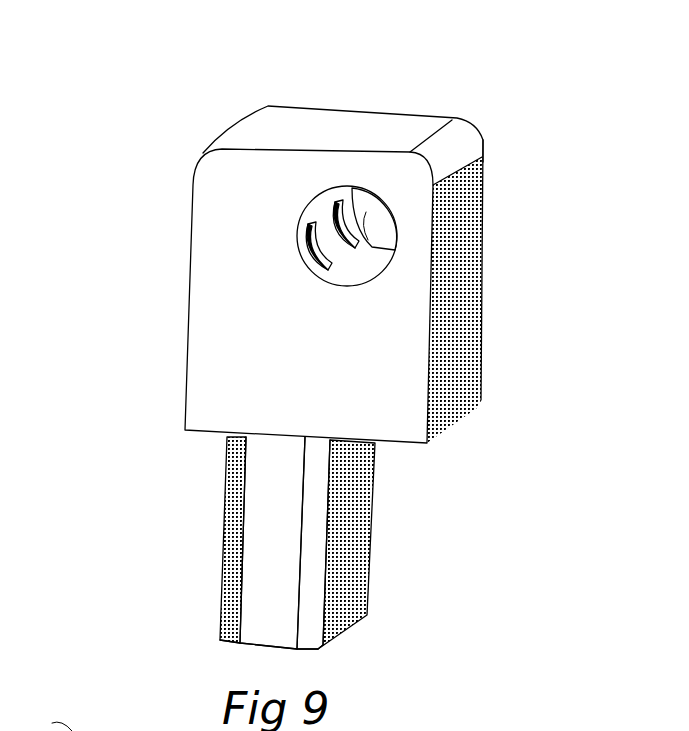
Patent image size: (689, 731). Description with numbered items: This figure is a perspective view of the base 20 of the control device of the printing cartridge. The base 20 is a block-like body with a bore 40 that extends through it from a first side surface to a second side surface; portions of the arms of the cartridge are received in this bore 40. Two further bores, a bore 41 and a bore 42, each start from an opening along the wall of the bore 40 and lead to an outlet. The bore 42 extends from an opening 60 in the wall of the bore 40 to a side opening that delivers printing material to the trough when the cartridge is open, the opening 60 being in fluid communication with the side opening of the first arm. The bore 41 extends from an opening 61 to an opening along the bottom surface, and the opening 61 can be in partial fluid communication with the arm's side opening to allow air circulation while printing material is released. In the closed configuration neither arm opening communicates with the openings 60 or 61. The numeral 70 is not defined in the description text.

The base 20 is at (303, 339).
The head portion 70 is at (478, 372).
The bore 40 is at (317, 194).
The bore 41 is at (371, 290).
The opening 61 is at (297, 230).
The bore 42 is at (313, 257).
The opening 60 is at (375, 226).